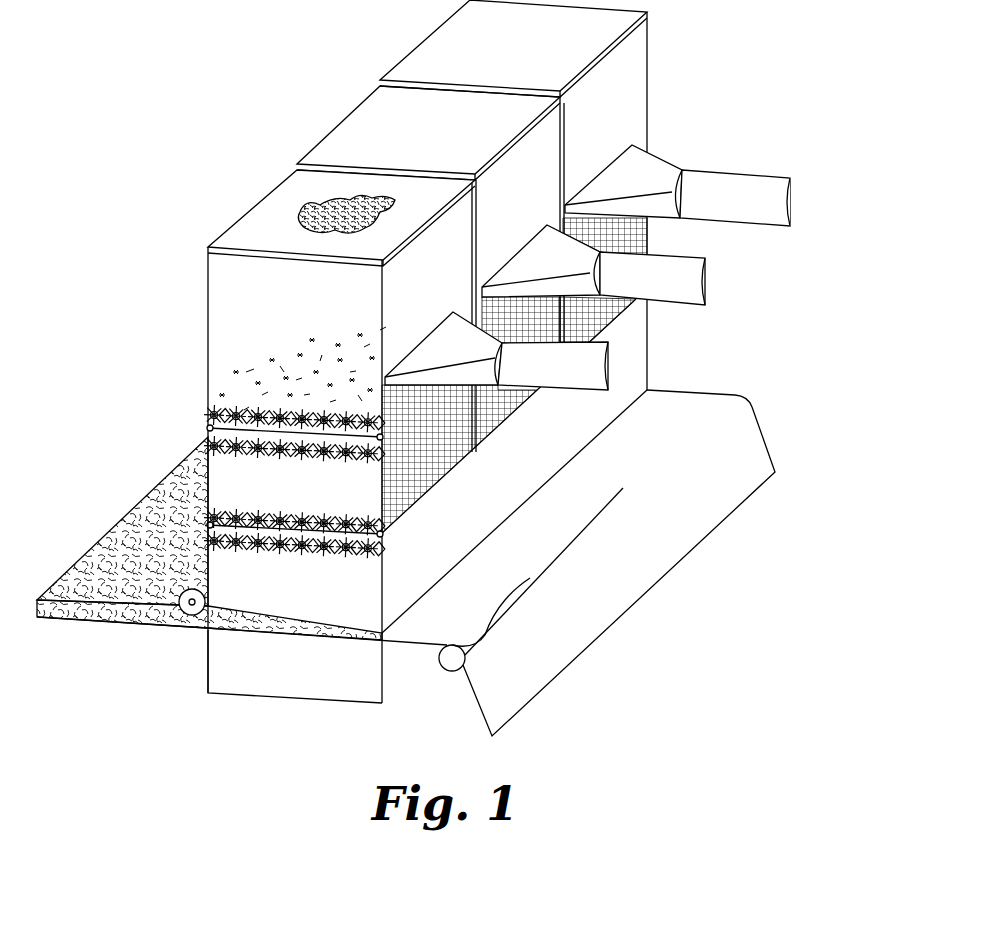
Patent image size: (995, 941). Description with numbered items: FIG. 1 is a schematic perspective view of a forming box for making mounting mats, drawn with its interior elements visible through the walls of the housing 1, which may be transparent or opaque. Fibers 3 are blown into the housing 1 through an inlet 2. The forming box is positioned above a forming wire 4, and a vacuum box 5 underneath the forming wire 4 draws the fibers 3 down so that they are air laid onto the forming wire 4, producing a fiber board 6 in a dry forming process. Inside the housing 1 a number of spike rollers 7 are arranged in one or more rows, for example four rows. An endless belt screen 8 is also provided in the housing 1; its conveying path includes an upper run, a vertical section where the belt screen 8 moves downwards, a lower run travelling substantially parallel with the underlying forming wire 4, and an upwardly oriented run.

The housing 1 is at (640, 62).
The inlet 2 is at (748, 187).
The fibers 3 is at (226, 324).
The forming wire 4 is at (705, 405).
The vacuum box 5 is at (217, 665).
The fiber board 6 is at (94, 552).
The spike rollers 7 is at (200, 406).
The endless belt screen 8 is at (206, 435).